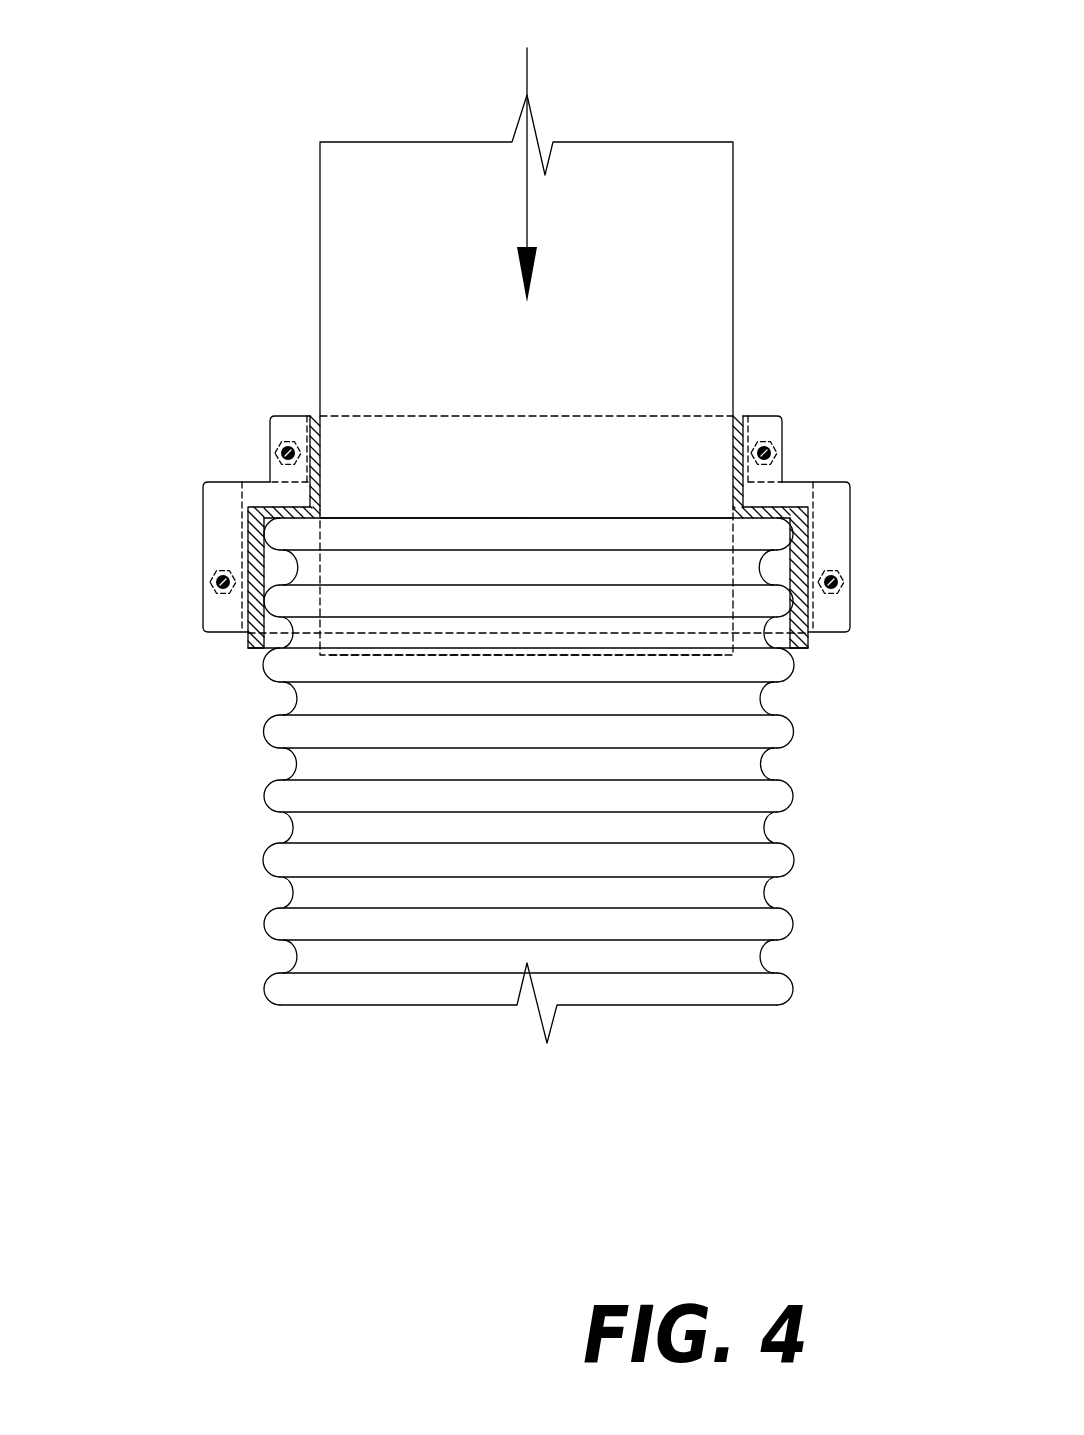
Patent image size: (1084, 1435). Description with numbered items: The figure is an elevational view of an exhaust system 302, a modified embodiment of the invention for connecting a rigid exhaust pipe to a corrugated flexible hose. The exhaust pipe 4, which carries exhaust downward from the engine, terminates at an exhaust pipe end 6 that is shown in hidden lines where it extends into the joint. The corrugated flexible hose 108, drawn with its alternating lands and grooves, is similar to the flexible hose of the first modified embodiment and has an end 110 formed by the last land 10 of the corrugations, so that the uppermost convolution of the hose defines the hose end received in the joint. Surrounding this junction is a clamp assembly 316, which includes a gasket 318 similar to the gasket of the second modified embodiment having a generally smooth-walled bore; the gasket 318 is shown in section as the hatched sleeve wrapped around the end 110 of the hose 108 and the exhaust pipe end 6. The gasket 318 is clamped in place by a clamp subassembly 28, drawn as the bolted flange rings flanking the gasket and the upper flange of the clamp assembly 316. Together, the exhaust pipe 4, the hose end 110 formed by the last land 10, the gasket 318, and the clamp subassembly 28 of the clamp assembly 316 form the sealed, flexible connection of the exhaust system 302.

The exhaust pipe 4 is at (733, 142).
The exhaust system 302 is at (520, 542).
The clamp assembly 316 is at (800, 420).
The clamp subassembly 28 is at (862, 625).
The gasket 318 is at (810, 648).
The flexible hose 108 is at (767, 1005).
The end 110 is at (382, 517).
The last land 10 is at (680, 517).
The exhaust pipe end 6 is at (601, 656).